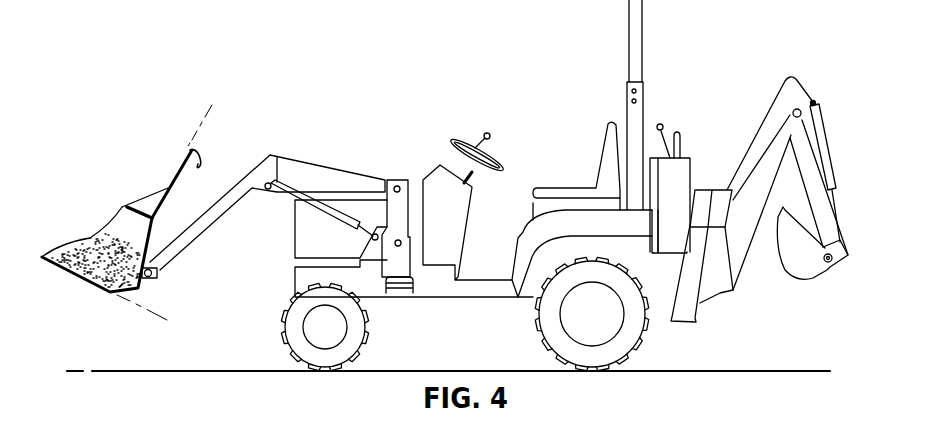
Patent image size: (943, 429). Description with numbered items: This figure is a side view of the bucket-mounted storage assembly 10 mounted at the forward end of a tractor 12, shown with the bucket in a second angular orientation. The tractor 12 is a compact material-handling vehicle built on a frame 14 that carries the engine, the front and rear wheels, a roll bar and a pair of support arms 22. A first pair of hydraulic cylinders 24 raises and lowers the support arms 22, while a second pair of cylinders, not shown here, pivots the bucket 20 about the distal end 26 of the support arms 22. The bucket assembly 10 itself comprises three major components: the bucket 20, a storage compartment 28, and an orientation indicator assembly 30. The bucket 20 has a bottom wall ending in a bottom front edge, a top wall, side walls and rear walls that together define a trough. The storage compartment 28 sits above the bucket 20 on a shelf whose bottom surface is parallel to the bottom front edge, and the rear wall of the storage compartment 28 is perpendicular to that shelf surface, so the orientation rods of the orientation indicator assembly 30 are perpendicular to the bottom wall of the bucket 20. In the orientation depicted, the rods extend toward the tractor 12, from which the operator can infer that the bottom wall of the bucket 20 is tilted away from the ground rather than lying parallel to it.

The bucket assembly 10 is at (63, 293).
The tractor 12 is at (442, 303).
The frame 14 is at (407, 178).
The bucket 20 is at (100, 287).
The support arms 22 is at (239, 170).
The hydraulic cylinders 24 is at (278, 198).
The distal end 26 is at (153, 276).
The storage compartment 28 is at (142, 198).
The orientation indicator assembly 30 is at (168, 188).